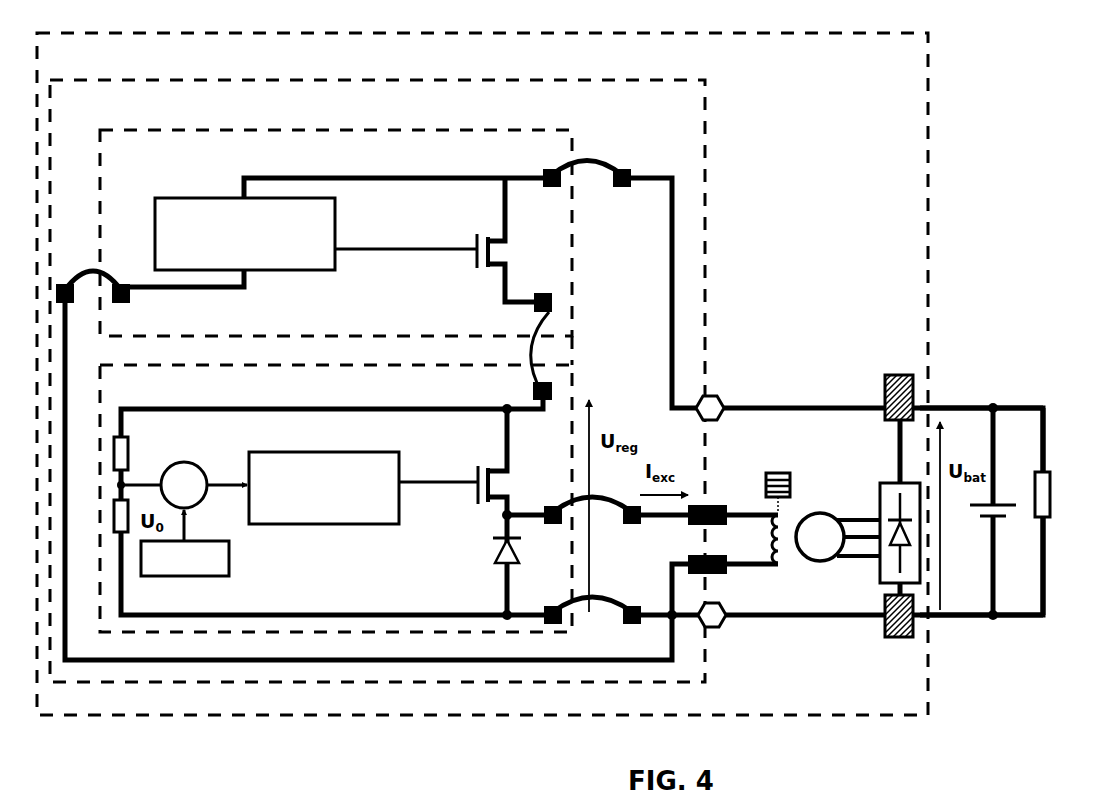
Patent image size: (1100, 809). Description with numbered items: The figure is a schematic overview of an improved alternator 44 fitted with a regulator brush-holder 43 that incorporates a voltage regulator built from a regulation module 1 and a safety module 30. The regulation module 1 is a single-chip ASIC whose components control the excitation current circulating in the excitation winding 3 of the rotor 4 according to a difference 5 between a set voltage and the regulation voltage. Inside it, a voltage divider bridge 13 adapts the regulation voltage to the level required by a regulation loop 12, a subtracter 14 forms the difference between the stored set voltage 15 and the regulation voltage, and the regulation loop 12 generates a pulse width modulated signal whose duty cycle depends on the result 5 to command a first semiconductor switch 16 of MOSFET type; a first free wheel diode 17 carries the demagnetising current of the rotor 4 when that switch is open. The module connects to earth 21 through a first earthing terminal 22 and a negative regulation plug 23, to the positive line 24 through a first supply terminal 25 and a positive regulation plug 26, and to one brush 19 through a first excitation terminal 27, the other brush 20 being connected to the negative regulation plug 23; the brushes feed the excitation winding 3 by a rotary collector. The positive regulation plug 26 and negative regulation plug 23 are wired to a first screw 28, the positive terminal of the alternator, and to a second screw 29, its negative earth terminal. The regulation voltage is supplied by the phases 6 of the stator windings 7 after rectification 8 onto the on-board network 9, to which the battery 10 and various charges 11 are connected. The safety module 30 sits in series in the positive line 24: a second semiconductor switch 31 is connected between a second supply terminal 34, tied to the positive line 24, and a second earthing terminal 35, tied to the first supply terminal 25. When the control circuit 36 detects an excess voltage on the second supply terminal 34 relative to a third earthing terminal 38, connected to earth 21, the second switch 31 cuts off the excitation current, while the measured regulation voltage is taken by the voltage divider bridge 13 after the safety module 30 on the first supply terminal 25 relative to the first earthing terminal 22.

The regulation module 1 is at (580, 368).
The excitation winding 3 is at (781, 563).
The rotor 4 is at (777, 472).
The difference 5 is at (233, 488).
The phases 6 is at (877, 566).
The stator windings 7 is at (816, 512).
The rectification 8 is at (880, 486).
The on-board network 9 is at (1040, 405).
The battery 10 is at (1000, 518).
The charges 11 is at (1050, 496).
The regulation loop 12 is at (305, 525).
The voltage divider bridge 13 is at (122, 512).
The subtracter 14 is at (193, 468).
The stored set voltage 15 is at (172, 577).
The first semiconductor switch 16 is at (480, 467).
The first free wheel diode 17 is at (498, 564).
The brush 19 is at (712, 505).
The brush 20 is at (720, 573).
The earth 21 is at (950, 620).
The first earthing terminal 22 is at (553, 608).
The negative regulation plug 23 is at (716, 621).
The positive line 24 is at (960, 404).
The first supply terminal 25 is at (547, 400).
The positive regulation plug 26 is at (714, 402).
The first excitation terminal 27 is at (553, 508).
The first screw 28 is at (885, 386).
The second screw 29 is at (885, 626).
The safety module 30 is at (578, 258).
The second semiconductor switch 31 is at (478, 237).
The second supply terminal 34 is at (551, 170).
The second earthing terminal 35 is at (548, 293).
The control circuit 36 is at (283, 271).
The third earthing terminal 38 is at (120, 303).
The regulator brush-holder 43 is at (710, 124).
The improved alternator 44 is at (933, 113).